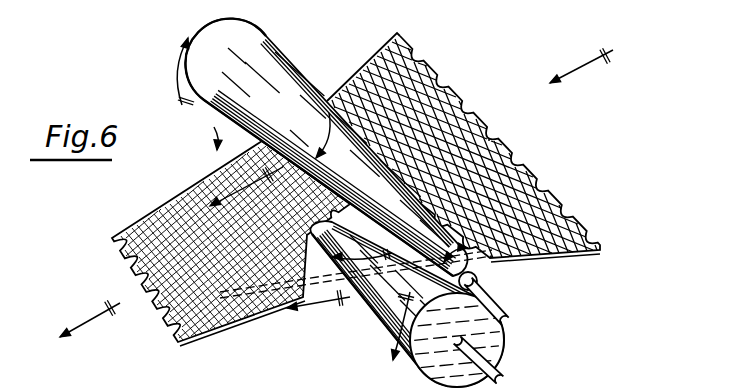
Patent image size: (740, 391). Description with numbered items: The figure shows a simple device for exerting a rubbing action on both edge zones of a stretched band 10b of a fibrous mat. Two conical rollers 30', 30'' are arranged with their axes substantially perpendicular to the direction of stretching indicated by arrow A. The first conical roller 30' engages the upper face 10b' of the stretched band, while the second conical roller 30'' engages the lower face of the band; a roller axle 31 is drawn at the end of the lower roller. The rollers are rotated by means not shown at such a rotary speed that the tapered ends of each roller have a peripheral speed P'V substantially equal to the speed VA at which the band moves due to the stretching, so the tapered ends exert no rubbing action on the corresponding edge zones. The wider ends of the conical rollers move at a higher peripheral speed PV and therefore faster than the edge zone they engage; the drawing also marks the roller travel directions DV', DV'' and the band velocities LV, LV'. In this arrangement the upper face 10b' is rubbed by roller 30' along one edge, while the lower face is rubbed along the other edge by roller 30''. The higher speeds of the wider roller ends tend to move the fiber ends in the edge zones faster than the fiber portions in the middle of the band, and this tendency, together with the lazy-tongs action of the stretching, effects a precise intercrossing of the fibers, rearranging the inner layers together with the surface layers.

The stretched band 10b is at (402, 198).
The upper face of the band 10b' is at (200, 266).
The conical roller 30' is at (346, 172).
The conical roller 30'' is at (407, 304).
The roller axle 31 is at (395, 363).
The peripheral velocity of roller PV is at (279, 214).
The peripheral speed of the tapered roller ends P'V is at (493, 269).
The direction of travel of first roller DV' is at (310, 135).
The direction of travel of second roller DV'' is at (362, 245).
The web travel velocity LV is at (248, 259).
The second web travel velocity LV' is at (155, 381).
The band speed VA is at (584, 55).
The direction of stretching A is at (90, 326).